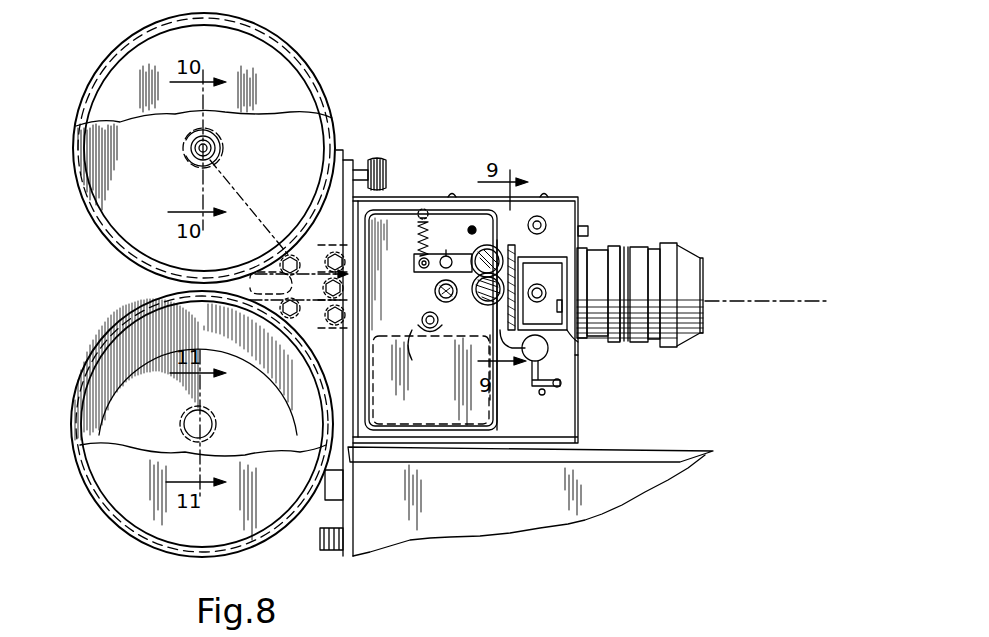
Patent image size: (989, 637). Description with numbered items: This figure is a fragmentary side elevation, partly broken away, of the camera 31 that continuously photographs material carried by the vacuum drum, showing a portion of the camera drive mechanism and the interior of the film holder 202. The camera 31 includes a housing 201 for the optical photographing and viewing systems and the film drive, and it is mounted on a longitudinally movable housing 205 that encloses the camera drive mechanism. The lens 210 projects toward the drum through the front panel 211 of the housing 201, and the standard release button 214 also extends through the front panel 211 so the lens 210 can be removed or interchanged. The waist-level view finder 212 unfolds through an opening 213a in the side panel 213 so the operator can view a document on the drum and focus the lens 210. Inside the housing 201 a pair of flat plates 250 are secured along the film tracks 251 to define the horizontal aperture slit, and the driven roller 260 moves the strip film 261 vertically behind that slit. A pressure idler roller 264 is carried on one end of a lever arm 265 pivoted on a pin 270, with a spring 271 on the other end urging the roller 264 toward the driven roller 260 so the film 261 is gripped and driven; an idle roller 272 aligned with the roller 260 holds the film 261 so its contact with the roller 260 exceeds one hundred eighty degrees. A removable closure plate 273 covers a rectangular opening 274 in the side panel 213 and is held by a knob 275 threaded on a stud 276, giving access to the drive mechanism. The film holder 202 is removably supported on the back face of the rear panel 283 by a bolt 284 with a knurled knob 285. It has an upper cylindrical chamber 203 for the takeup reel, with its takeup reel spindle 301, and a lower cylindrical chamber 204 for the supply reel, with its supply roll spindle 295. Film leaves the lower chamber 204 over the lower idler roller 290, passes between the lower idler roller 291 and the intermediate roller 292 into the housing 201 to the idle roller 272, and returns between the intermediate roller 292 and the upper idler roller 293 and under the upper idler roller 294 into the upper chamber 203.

The upper cylindrical chamber 203 is at (118, 76).
The takeup reel spindle 301 is at (186, 150).
The lower cylindrical chamber 204 is at (112, 338).
The supply roll spindle 295 is at (206, 432).
The rear panel 283 is at (353, 488).
The film holder 202 is at (338, 150).
The bolt 284 is at (363, 168).
The knurled knob 285 is at (382, 160).
The camera 31 is at (466, 120).
The housing 201 is at (552, 200).
The front panel 211 is at (578, 404).
The side panel 213 is at (565, 430).
The rectangular opening 274 is at (373, 410).
The knob 275 is at (427, 354).
The stud 276 is at (436, 330).
The removable closure plate 273 is at (480, 412).
The spring 271 is at (415, 230).
The pin 270 is at (426, 222).
The lever arm 265 is at (414, 264).
The pressure idler roller 264 is at (437, 238).
The strip film 261 is at (384, 298).
The driven roller 260 is at (482, 300).
The idle roller 272 is at (436, 292).
The film tracks 251 is at (515, 258).
The flat plates 250 is at (506, 322).
The waist-level view finder 212 is at (570, 338).
The opening 213a is at (576, 360).
The release button 214 is at (588, 224).
The lens 210 is at (666, 244).
The longitudinally movable housing 205 is at (664, 458).
The upper idler roller 294 is at (294, 256).
The upper idler roller 293 is at (336, 252).
The intermediate roller 292 is at (326, 288).
The lower idler roller 290 is at (278, 318).
The lower idler roller 291 is at (333, 326).